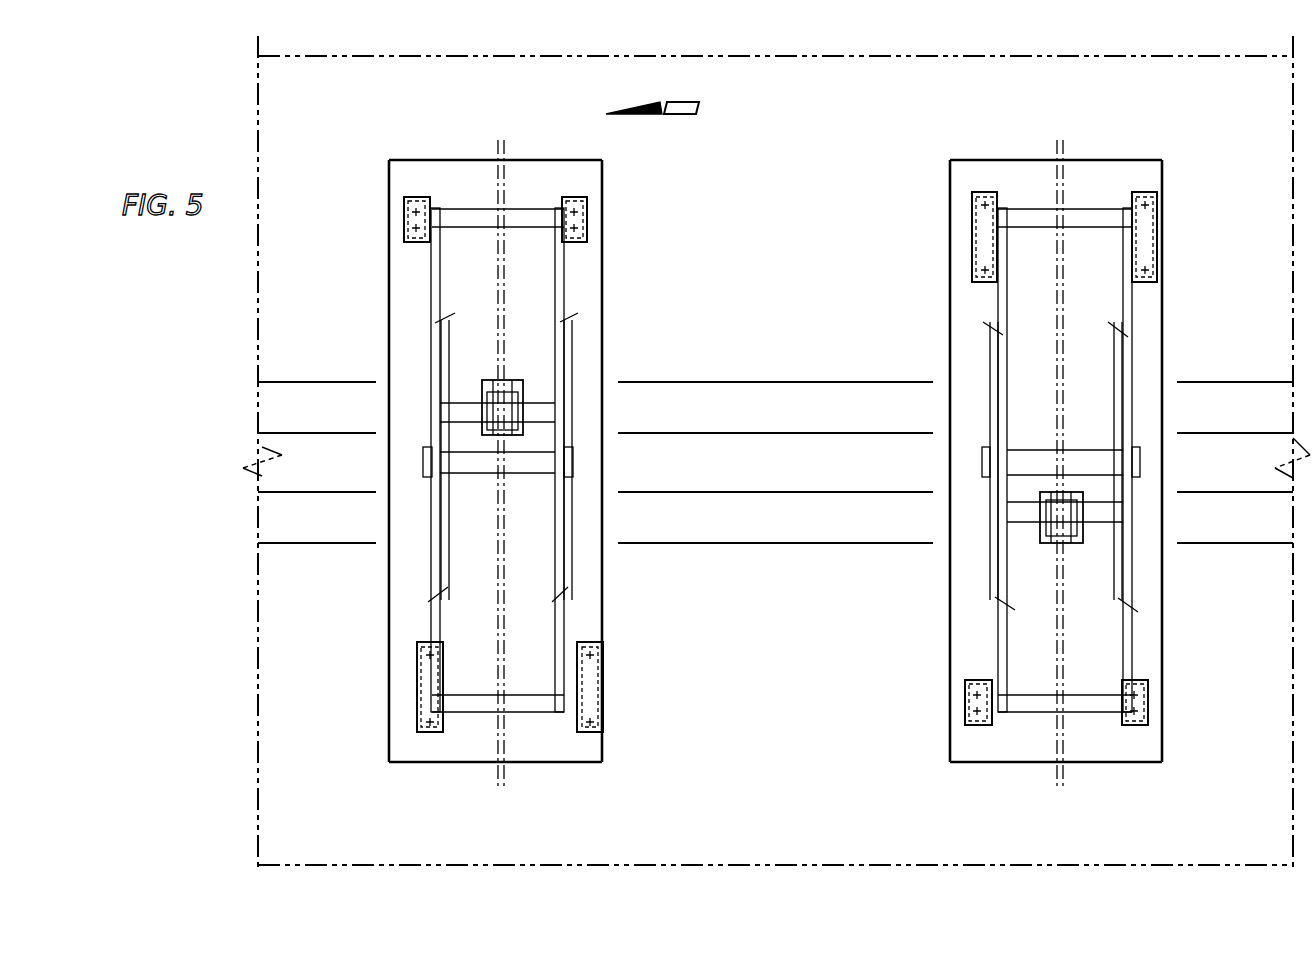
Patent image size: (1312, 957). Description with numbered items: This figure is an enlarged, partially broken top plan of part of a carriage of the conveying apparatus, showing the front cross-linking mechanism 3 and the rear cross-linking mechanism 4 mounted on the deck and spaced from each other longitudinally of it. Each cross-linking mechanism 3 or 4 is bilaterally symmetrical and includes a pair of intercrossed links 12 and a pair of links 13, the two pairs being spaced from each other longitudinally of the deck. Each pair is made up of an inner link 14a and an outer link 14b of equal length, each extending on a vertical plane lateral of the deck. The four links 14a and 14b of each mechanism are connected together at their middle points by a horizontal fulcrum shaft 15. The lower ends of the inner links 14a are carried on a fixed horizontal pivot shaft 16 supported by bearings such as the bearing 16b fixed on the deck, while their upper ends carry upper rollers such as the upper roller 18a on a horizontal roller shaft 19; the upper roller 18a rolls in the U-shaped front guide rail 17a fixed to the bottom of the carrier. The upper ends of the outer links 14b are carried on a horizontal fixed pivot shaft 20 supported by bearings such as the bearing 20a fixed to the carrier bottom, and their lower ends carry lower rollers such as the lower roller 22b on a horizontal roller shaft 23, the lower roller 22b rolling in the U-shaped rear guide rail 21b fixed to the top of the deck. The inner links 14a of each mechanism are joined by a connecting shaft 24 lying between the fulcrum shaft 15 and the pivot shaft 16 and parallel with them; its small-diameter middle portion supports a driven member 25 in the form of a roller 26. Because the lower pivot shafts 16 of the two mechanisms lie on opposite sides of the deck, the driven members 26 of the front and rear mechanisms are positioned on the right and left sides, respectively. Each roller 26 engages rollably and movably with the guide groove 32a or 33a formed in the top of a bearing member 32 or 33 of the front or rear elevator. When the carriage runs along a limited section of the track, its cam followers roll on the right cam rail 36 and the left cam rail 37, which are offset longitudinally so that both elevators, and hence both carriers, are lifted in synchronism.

The front cross-linking mechanism 3 is at (588, 361).
The rear cross-linking mechanism 4 is at (983, 346).
The pair of intercrossed links 12 is at (424, 560).
The pair of links 13 is at (578, 568).
The inner link 14a is at (558, 268).
The outer link 14b is at (436, 292).
The fulcrum shaft 15 is at (530, 470).
The fixed horizontal pivot shaft 16 is at (532, 209).
The bearing 16b is at (588, 220).
The front guide rail 17a is at (423, 678).
The upper roller 18a is at (432, 703).
The horizontal roller shaft 19 is at (474, 712).
The horizontal fixed pivot shaft 20 is at (467, 209).
The bearing 20a is at (404, 218).
The rear guide rail 21b is at (590, 666).
The lower roller 22b is at (600, 710).
The horizontal roller shaft 23 is at (534, 712).
The connecting shaft 24 is at (462, 412).
The driven member 25 is at (513, 428).
The roller 26 is at (781, 462).
The bearing member 32 is at (495, 380).
The guide groove 32a is at (510, 380).
The bearing member 33 is at (1040, 533).
The guide groove 33a is at (1066, 545).
The right cam rail 36 is at (782, 402).
The left cam rail 37 is at (784, 522).